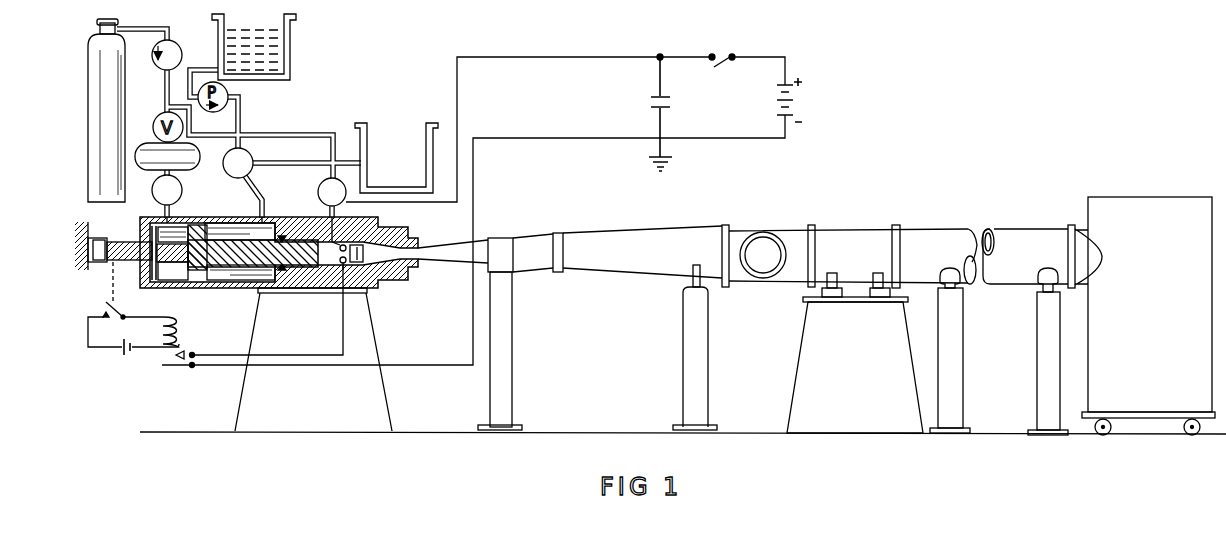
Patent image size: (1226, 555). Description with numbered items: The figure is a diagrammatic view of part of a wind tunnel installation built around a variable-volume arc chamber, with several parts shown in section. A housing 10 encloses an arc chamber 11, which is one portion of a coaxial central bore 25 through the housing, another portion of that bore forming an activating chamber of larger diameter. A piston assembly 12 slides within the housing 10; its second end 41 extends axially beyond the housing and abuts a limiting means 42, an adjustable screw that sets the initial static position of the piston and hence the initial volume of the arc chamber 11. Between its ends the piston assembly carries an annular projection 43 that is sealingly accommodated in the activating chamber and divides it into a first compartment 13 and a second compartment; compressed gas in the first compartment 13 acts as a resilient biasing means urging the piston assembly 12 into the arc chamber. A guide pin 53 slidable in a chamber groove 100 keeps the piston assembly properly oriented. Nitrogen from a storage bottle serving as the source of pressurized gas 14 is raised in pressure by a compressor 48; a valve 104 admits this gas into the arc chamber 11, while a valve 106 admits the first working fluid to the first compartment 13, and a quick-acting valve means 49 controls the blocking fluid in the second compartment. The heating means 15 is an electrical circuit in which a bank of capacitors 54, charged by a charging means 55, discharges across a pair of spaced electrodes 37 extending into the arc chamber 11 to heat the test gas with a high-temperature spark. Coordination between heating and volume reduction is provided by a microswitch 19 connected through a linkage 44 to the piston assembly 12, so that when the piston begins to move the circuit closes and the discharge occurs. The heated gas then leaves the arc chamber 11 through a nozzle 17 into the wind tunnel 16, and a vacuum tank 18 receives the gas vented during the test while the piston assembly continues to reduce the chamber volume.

The housing 10 is at (292, 214).
The arc chamber 11 is at (359, 254).
The piston assembly 12 is at (240, 270).
The first compartment 13 is at (173, 271).
The source of pressurized gas 14 is at (88, 93).
The heating means 15 is at (564, 53).
The wind tunnel 16 is at (853, 226).
The nozzle 17 is at (602, 236).
The vacuum tank 18 is at (1161, 336).
The microswitch 19 is at (122, 319).
The central bore 25 is at (284, 270).
The electrodes 37 is at (338, 260).
The second end 41 is at (105, 262).
The limiting means 42 is at (98, 240).
The annular projection 43 is at (202, 217).
The linkage 44 is at (112, 292).
The compressor 48 is at (179, 42).
The valve means 49 is at (233, 178).
The guide pin 53 is at (172, 284).
The capacitors 54 is at (671, 97).
The charging means 55 is at (803, 105).
The chamber groove 100 is at (182, 286).
The valve 104 is at (336, 178).
The valve 106 is at (152, 193).